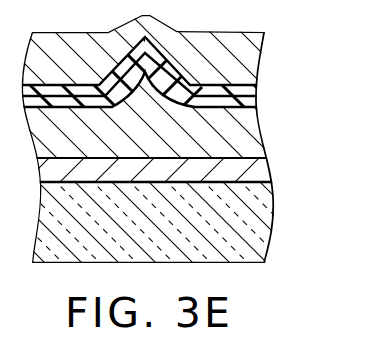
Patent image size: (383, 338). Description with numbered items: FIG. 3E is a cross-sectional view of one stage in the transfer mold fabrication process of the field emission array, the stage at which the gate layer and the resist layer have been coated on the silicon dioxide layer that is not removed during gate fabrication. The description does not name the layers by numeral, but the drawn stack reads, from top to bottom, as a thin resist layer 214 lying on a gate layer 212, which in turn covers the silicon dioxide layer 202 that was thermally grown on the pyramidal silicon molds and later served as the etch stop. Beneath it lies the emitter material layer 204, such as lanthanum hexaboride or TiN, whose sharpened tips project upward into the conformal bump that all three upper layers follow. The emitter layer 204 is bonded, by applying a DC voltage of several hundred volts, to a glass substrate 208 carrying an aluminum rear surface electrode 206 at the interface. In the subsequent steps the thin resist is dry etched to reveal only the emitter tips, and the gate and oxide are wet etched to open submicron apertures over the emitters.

The upper insulating layer 214 is at (261, 58).
The electrode layer 212 is at (259, 87).
The dielectric layer 202 is at (257, 107).
The intermediate layer 204 is at (268, 147).
The insulating layer 206 is at (277, 178).
The substrate 208 is at (272, 238).